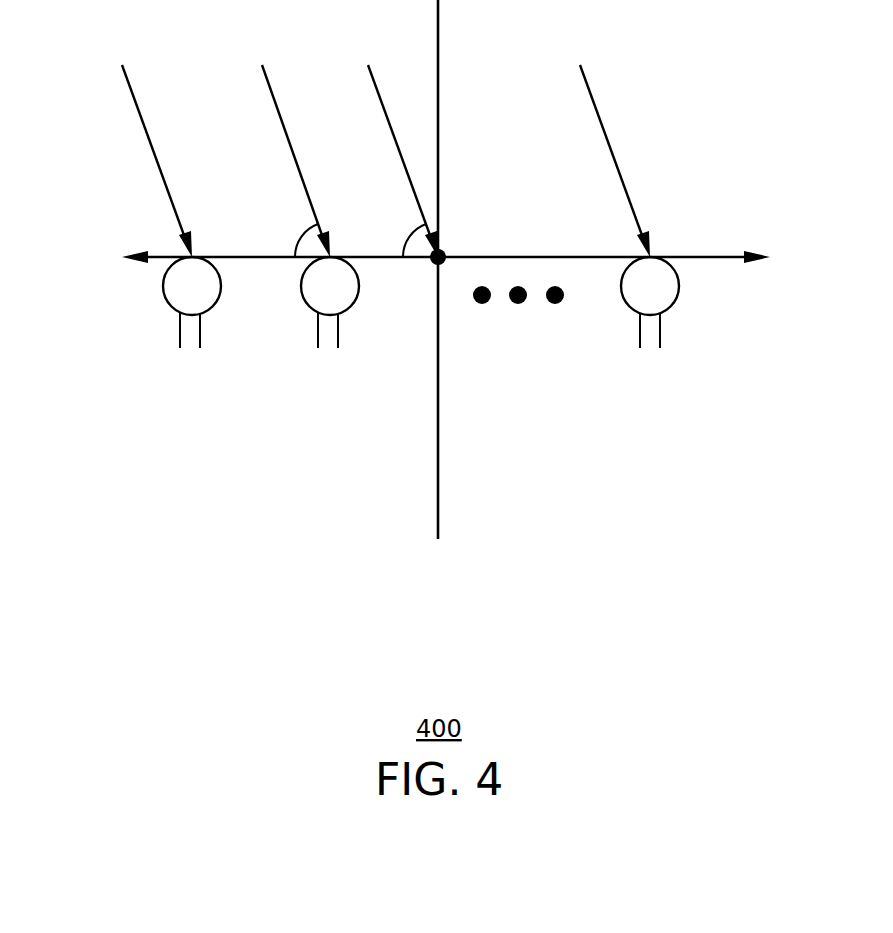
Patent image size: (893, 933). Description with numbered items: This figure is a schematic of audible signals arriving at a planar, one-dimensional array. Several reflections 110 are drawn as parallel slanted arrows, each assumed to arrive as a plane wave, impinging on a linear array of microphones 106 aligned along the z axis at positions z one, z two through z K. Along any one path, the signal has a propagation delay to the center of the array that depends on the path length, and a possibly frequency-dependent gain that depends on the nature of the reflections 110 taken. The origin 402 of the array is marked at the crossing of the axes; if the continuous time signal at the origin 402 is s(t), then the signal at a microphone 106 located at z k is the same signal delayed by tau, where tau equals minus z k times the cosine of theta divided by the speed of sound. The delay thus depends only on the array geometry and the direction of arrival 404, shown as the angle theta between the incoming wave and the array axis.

The reflection 110 is at (133, 99).
The microphone 106 is at (183, 410).
The origin 402 is at (445, 247).
The direction of arrival 404 is at (395, 197).